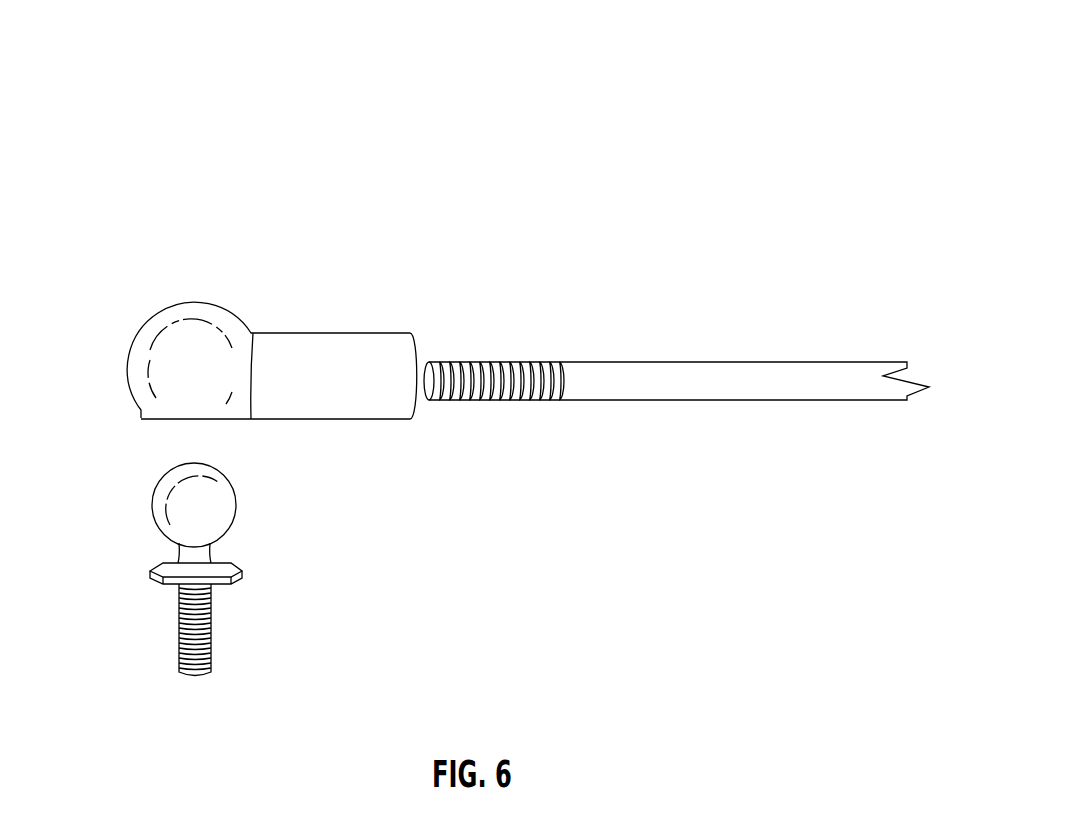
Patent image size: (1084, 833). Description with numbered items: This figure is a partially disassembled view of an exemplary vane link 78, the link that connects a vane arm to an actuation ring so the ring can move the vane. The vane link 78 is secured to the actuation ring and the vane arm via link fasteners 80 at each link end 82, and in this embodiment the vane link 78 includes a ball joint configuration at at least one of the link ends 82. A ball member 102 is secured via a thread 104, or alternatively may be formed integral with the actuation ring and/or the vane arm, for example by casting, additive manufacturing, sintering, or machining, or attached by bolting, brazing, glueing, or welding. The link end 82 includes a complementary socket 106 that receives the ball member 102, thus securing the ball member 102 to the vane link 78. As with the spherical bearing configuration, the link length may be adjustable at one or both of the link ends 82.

The vane link 78 is at (803, 41).
The link fastener 80 is at (683, 383).
The link end 82 is at (323, 348).
The ball member 102 is at (230, 505).
The thread 104 is at (197, 630).
The socket 106 is at (166, 364).